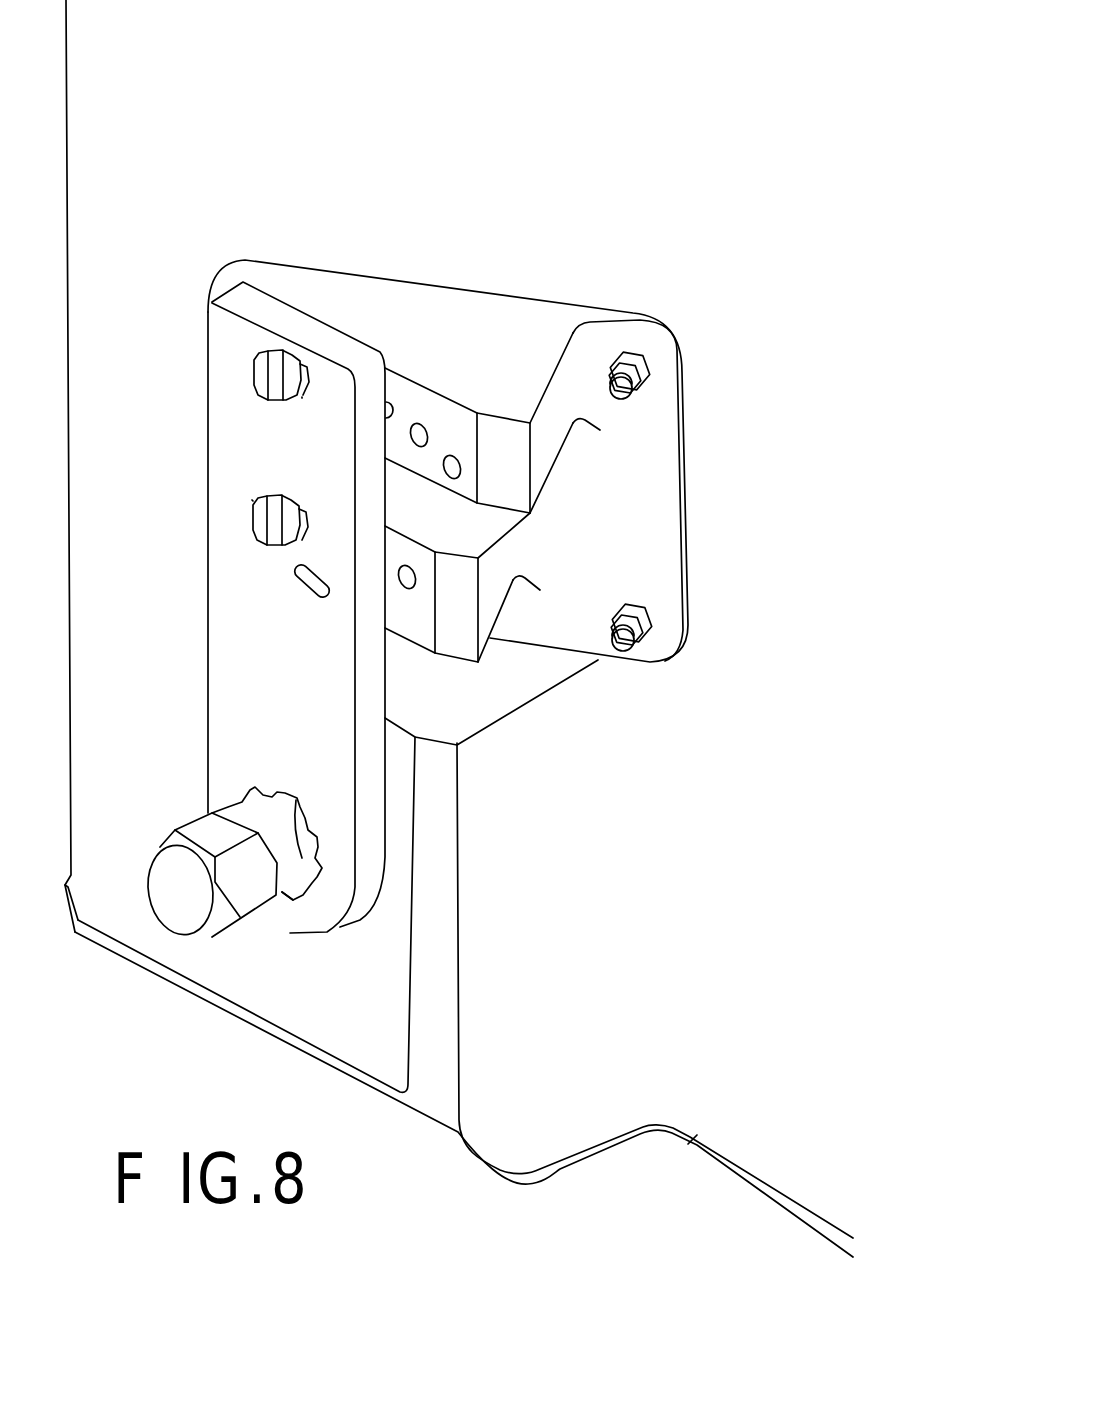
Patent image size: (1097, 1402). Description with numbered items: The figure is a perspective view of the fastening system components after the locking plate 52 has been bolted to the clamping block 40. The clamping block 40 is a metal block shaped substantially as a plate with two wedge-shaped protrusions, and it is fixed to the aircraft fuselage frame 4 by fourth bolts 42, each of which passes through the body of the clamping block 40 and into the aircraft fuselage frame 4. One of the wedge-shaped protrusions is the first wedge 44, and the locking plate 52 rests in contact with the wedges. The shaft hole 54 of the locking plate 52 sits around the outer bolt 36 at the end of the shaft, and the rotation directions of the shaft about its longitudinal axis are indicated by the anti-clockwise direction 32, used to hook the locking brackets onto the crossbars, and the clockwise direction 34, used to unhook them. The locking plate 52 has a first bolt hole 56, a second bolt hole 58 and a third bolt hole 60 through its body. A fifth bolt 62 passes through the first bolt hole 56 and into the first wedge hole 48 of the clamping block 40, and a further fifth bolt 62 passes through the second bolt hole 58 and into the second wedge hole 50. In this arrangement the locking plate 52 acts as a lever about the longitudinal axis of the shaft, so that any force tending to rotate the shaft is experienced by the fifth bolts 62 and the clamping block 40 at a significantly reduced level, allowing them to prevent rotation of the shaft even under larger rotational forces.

The aircraft fuselage frame 4 is at (160, 203).
The anti-clockwise rotation direction 32 is at (268, 803).
The clockwise rotation direction 34 is at (229, 937).
The outer bolt 36 is at (286, 876).
The clamping block 40 is at (507, 293).
The fourth bolt 42 is at (640, 360).
The first wedge 44 is at (463, 493).
The first wedge hole 48 is at (417, 427).
The second wedge hole 50 is at (410, 567).
The locking plate 52 is at (207, 642).
The shaft hole 54 is at (288, 798).
The first bolt hole 56 is at (302, 397).
The second bolt hole 58 is at (252, 500).
The third bolt hole 60 is at (312, 597).
The fifth bolt 62 is at (255, 375).